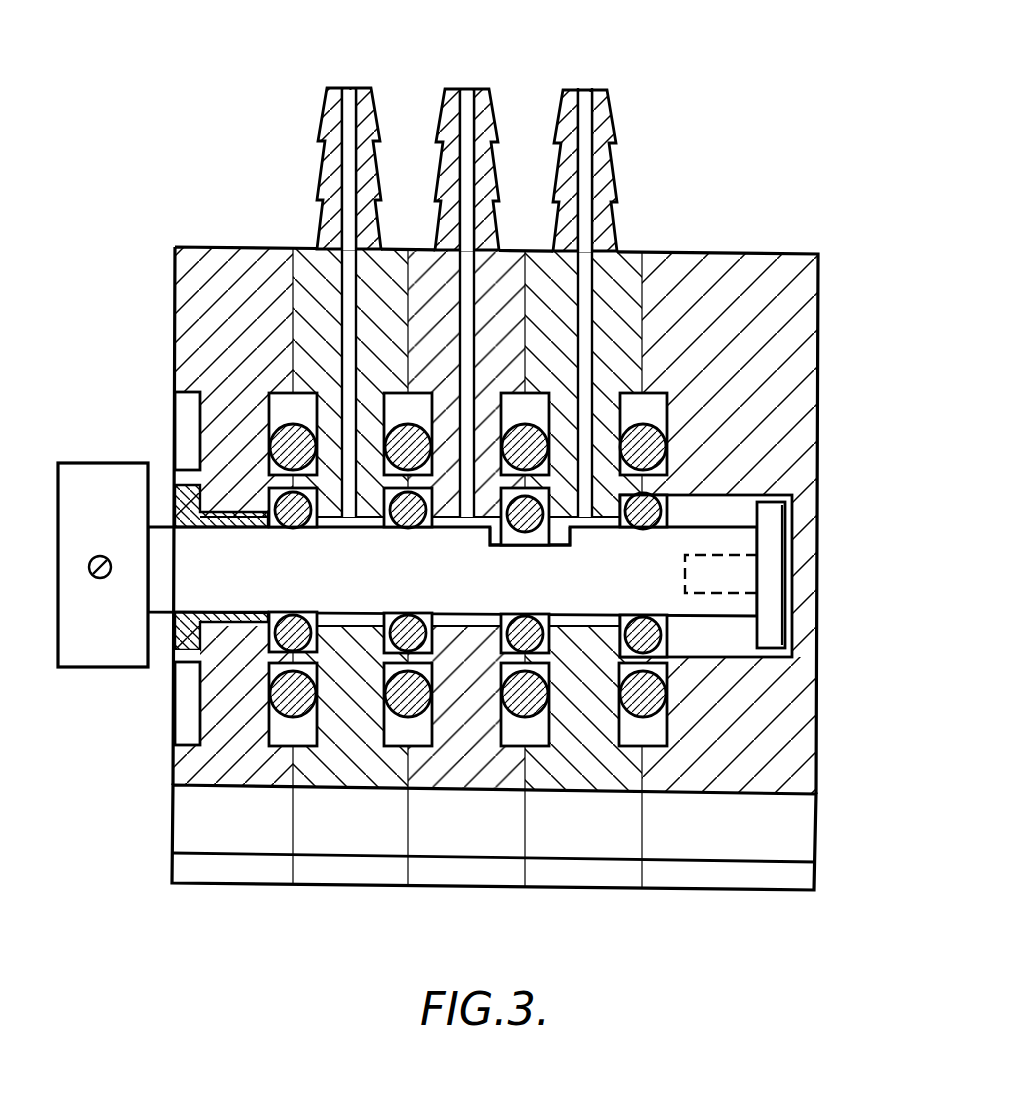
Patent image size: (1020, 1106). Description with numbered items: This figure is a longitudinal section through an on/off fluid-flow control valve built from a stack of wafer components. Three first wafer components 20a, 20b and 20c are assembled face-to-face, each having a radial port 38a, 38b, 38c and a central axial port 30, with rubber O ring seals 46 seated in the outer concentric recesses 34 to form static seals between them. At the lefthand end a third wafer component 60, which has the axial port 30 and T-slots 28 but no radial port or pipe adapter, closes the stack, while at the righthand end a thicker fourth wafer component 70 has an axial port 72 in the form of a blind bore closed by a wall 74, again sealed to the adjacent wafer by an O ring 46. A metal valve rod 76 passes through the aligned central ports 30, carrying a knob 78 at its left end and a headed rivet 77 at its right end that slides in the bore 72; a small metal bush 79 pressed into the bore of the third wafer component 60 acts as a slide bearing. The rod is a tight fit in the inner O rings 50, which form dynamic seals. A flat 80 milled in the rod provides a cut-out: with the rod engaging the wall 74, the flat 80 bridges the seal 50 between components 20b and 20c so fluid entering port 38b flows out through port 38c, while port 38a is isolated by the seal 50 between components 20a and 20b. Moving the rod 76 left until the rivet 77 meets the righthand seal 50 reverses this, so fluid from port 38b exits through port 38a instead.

The first wafer component 20a is at (314, 233).
The first wafer component 20b is at (436, 104).
The first wafer component 20c is at (616, 96).
The port 38a is at (331, 126).
The port 38b is at (468, 113).
The port 38c is at (582, 162).
The third wafer component 60 is at (492, 405).
The fourth wafer component 70 is at (824, 340).
The outer concentric recess 34 is at (182, 412).
The O ring seal 46 is at (655, 456).
The axial port 72 is at (757, 488).
The rivet 77 is at (777, 538).
The wall 74 is at (812, 589).
The valve rod 76 is at (223, 552).
The knob 78 is at (105, 487).
The metal bush 79 is at (176, 634).
The inner O ring 50 is at (297, 530).
The central axial port 30 is at (373, 522).
The flat 80 is at (552, 517).
The T-slot 28 is at (592, 840).